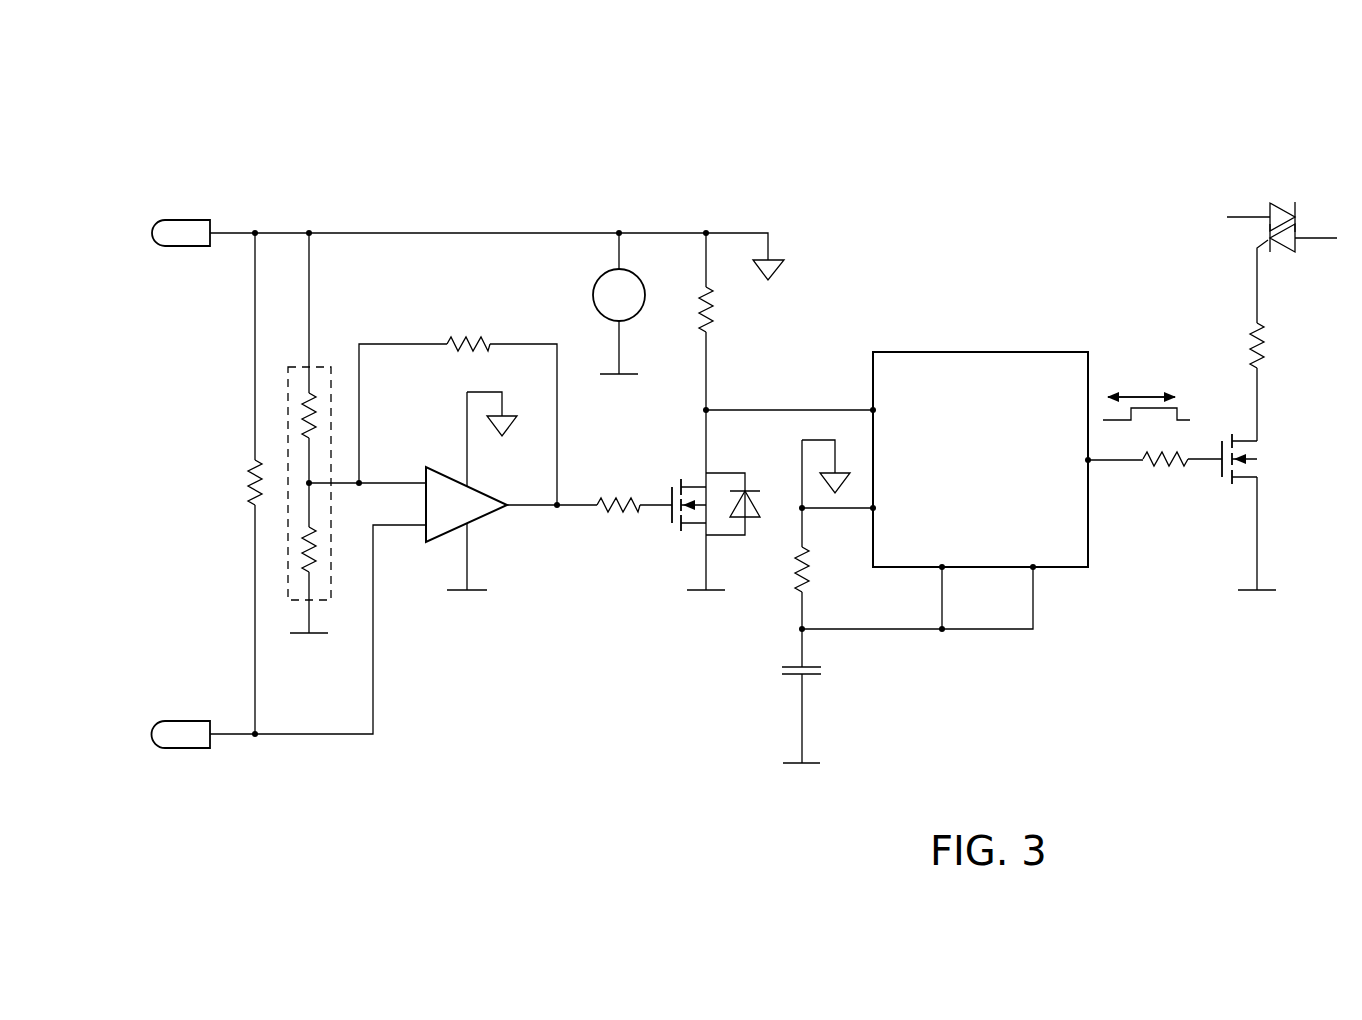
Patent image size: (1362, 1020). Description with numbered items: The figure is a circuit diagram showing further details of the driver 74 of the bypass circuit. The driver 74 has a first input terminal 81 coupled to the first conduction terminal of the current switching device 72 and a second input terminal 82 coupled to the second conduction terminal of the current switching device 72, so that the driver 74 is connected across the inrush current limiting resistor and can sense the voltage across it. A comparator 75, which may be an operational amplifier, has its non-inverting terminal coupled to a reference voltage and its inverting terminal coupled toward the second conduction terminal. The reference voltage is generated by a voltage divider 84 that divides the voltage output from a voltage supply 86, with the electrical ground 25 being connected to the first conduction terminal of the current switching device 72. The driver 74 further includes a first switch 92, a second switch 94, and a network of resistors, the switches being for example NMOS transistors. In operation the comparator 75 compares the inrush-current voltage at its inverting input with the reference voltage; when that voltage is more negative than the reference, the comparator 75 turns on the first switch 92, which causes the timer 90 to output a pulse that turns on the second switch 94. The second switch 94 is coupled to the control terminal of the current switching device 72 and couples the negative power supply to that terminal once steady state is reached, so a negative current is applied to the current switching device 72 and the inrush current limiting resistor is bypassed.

The driver 74 is at (1178, 108).
The first input terminal 81 is at (188, 219).
The second input terminal 82 is at (188, 720).
The voltage divider 84 is at (322, 366).
The comparator 75 is at (487, 519).
The electrical ground 25 is at (773, 274).
The voltage supply 86 is at (598, 277).
The first switch 92 is at (659, 522).
The timer 90 is at (985, 352).
The second switch 94 is at (1270, 447).
The current switching device 72 is at (1295, 190).